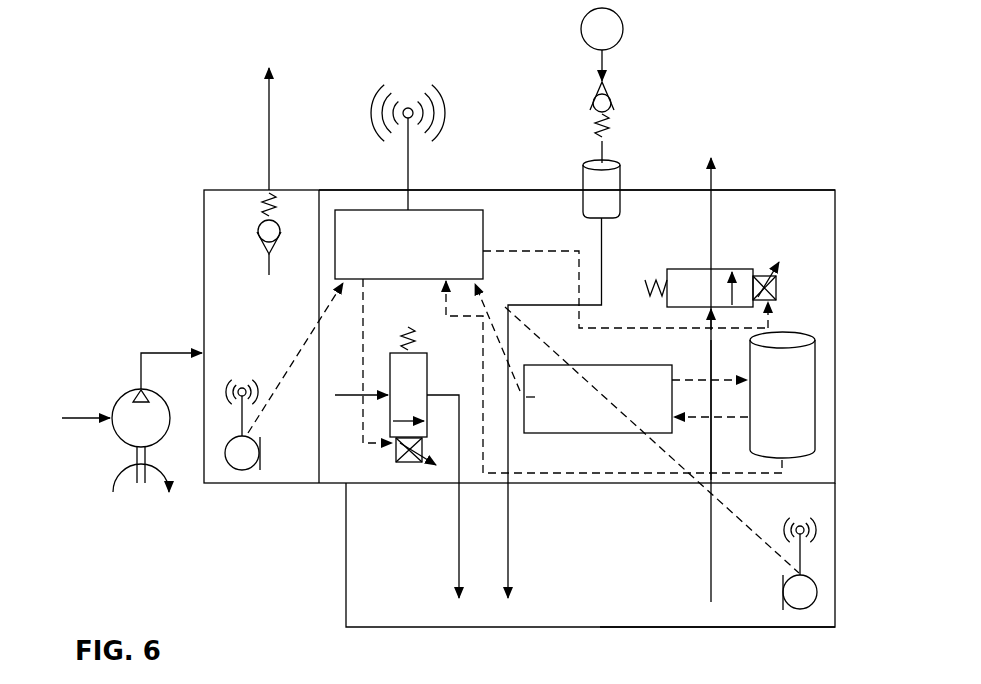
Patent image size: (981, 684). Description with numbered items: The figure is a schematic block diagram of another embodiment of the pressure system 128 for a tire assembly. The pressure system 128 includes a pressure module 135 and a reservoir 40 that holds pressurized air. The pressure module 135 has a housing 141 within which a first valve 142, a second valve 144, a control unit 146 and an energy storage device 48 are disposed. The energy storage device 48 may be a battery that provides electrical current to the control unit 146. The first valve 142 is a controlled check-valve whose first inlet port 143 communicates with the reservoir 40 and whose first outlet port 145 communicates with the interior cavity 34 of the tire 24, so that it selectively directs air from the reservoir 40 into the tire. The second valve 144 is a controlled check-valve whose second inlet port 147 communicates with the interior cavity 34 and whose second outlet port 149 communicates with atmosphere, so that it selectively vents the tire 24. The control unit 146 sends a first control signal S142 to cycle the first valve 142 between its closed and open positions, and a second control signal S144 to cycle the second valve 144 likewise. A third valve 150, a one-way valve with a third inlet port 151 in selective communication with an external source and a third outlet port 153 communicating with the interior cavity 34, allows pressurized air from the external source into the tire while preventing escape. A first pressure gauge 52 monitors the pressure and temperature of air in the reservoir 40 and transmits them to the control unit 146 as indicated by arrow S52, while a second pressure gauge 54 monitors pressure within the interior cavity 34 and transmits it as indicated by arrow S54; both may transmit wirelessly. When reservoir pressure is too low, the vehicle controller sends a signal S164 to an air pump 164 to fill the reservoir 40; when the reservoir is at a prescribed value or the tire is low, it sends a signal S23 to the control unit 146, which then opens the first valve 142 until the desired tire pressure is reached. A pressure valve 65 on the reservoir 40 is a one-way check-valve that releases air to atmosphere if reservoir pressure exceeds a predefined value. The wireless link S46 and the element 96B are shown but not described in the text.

The reservoir 40 is at (218, 217).
The interior cavity 34 is at (626, 606).
The tire 24 is at (760, 629).
The pressure system 128 is at (241, 130).
The pressure valve 65 is at (258, 240).
The wireless signal 46 S46 is at (368, 110).
The signal S23 is at (452, 108).
The control unit 146 is at (425, 258).
The pressure module 135 is at (500, 190).
The third inlet port 151 is at (605, 60).
The third valve 150 is at (590, 97).
The third outlet port 153 is at (550, 305).
The second outlet port 149 is at (711, 227).
The second inlet port 147 is at (711, 368).
The housing 141 is at (773, 190).
The second valve 144 is at (745, 268).
The second control signal S144 is at (600, 327).
The energy storage device 48 is at (795, 411).
The clutch actuator 96B is at (663, 406).
The first valve 142 is at (420, 383).
The first control signal S142 is at (363, 342).
The first inlet port 143 is at (334, 398).
The first outlet port 145 is at (459, 468).
The first pressure gauge 52 is at (246, 468).
The monitored pressure and temperature transmission S52 is at (293, 362).
The second pressure gauge 54 is at (812, 593).
The monitored pressure transmission S54 is at (763, 542).
The air pump 164 is at (130, 393).
The signal S164 is at (80, 416).